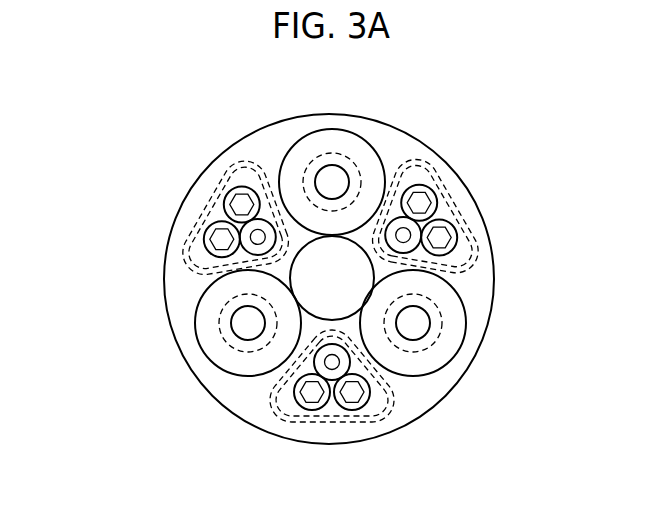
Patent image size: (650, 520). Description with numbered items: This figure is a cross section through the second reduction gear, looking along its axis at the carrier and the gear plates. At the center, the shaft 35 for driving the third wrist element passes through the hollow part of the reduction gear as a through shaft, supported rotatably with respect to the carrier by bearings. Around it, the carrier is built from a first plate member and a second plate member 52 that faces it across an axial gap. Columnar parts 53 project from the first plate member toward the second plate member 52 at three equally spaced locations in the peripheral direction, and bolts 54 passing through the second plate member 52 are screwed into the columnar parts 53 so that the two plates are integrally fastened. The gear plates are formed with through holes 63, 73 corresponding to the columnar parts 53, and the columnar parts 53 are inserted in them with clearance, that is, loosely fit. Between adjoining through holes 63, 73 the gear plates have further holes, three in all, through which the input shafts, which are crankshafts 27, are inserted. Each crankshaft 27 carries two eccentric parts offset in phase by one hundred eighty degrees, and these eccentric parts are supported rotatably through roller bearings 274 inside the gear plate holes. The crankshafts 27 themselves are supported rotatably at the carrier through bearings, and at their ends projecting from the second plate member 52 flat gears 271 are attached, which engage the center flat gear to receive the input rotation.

The crankshaft 27 is at (332, 265).
The flat gear 271 is at (350, 138).
The roller bearing 274 is at (324, 224).
The shaft 35 is at (348, 283).
The second plate member 52 is at (492, 232).
The columnar part 53 is at (294, 310).
The bolt 54 is at (452, 211).
The through hole 63 is at (260, 290).
The through hole 73 is at (190, 233).